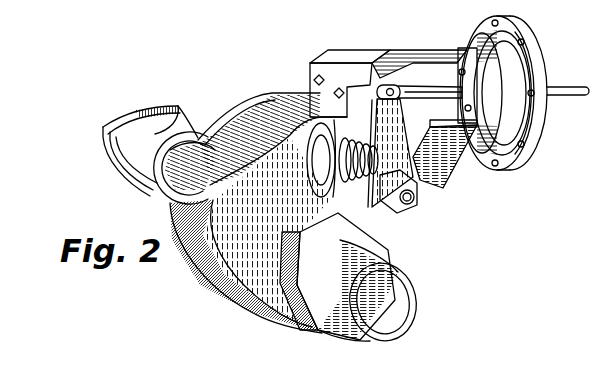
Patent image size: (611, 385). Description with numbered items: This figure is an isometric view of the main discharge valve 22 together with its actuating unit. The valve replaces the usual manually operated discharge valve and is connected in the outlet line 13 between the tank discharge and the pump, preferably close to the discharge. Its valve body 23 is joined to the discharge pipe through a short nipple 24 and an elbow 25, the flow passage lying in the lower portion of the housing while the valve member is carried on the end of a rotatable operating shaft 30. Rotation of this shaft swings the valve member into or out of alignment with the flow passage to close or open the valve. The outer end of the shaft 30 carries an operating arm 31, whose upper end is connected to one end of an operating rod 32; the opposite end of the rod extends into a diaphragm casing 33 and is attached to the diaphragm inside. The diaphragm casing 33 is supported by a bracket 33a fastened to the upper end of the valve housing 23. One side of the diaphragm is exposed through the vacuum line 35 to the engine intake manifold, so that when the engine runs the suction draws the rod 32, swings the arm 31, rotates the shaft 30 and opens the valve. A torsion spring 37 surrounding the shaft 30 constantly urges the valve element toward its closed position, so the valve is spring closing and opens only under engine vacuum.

The outlet line 13 is at (413, 313).
The main discharge valve 22 is at (288, 100).
The valve body 23 is at (266, 124).
The nipple 24 is at (178, 168).
The elbow 25 is at (113, 157).
The operating shaft 30 is at (413, 200).
The operating arm 31 is at (363, 85).
The operating rod 32 is at (420, 88).
The diaphragm casing 33 is at (480, 43).
The bracket 33a is at (447, 160).
The vacuum line 35 is at (580, 97).
The torsion spring 37 is at (315, 197).